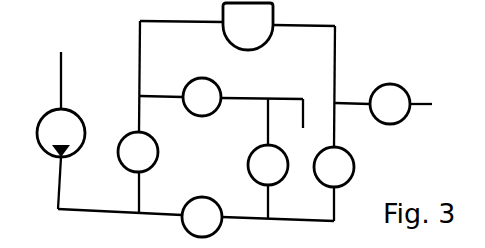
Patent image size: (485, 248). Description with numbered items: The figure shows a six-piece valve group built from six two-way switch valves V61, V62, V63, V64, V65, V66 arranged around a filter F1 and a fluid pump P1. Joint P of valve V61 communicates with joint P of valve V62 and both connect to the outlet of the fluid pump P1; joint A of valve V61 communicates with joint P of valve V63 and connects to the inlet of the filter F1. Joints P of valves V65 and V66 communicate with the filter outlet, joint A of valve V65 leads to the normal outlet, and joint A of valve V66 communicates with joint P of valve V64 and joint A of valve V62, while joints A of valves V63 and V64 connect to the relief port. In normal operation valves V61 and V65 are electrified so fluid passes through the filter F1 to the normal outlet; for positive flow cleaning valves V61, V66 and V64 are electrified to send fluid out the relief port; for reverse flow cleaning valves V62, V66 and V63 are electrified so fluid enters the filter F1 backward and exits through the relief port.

The fluid pump P1 is at (61, 133).
The filter F1 is at (248, 26).
The two-way switch valve V61 is at (138, 152).
The two-way switch valve V62 is at (202, 217).
The two-way switch valve V63 is at (202, 97).
The two-way switch valve V64 is at (268, 165).
The two-way switch valve V65 is at (390, 104).
The two-way switch valve V66 is at (334, 167).